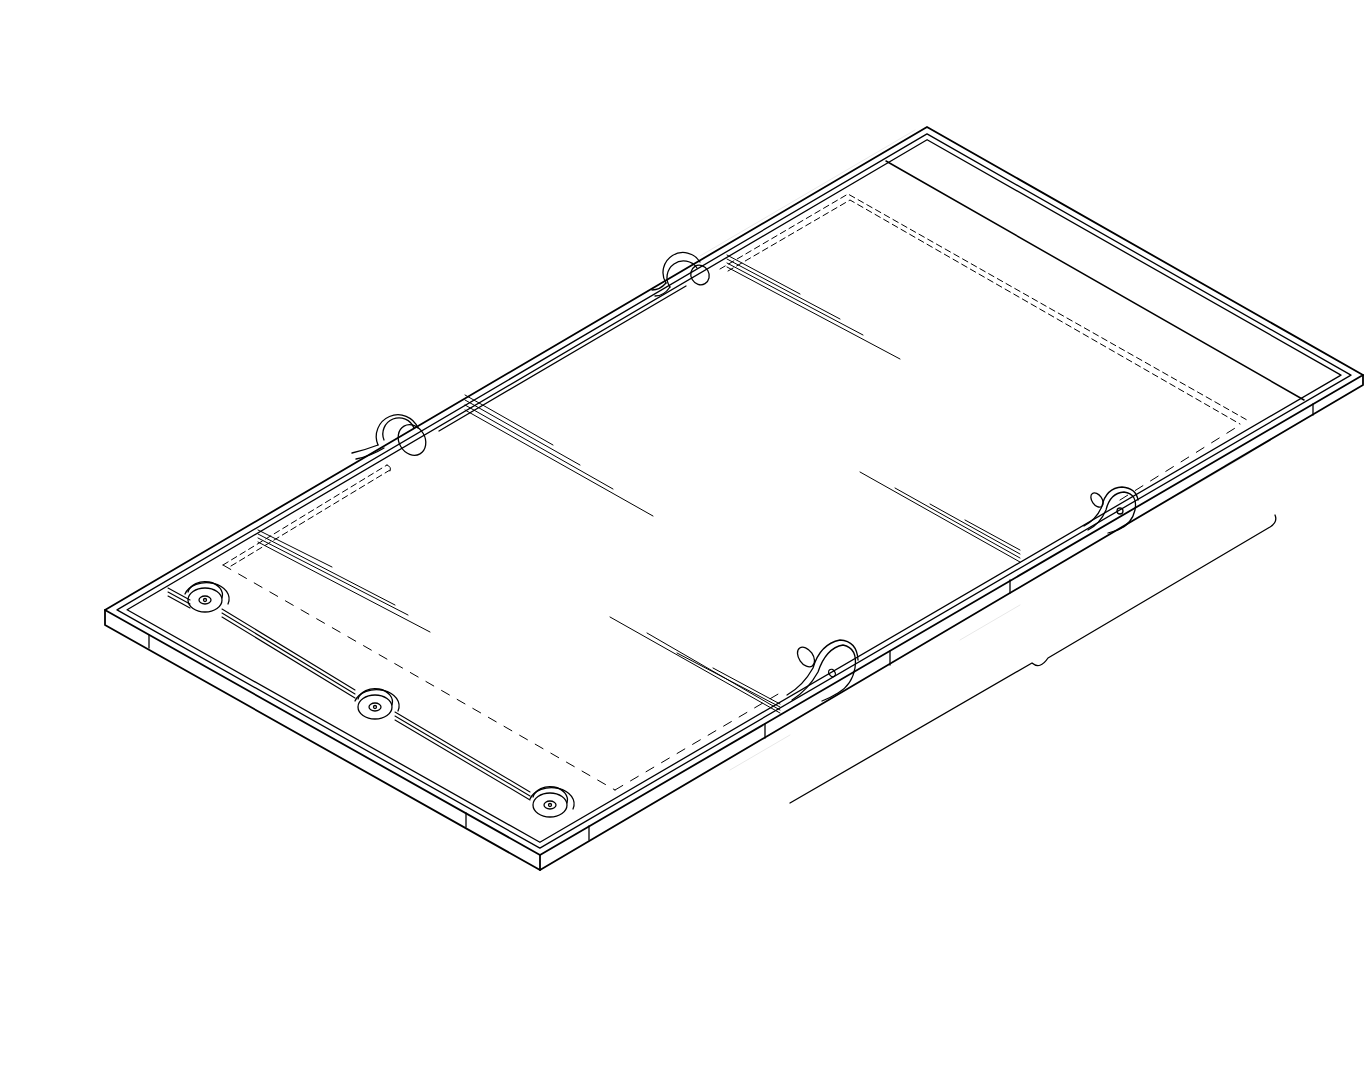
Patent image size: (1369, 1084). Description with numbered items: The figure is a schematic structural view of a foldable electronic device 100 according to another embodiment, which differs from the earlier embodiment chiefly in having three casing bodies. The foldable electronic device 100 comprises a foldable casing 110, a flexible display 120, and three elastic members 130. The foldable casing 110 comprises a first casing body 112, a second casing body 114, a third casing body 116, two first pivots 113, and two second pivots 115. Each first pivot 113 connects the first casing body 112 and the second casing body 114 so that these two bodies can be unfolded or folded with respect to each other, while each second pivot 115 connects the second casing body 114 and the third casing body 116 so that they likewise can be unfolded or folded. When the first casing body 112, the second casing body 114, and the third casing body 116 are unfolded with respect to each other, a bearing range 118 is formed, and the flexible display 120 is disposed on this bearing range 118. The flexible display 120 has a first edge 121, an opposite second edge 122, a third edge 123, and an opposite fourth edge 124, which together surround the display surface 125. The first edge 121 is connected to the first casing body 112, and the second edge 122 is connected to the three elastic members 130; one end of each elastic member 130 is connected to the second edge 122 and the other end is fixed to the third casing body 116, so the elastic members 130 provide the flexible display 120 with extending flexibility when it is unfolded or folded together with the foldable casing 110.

The foldable electronic device 100 is at (1176, 758).
The foldable casing 110 is at (734, 502).
The first casing body 112 is at (1208, 481).
The first pivot 113 is at (700, 246).
The second casing body 114 is at (978, 607).
The second pivot 115 is at (412, 405).
The third casing body 116 is at (757, 742).
The bearing range 118 is at (998, 200).
The flexible display 120 is at (465, 425).
The first edge 121 is at (1220, 345).
The second edge 122 is at (480, 770).
The third edge 123 is at (1253, 440).
The fourth edge 124 is at (790, 205).
The display surface 125 is at (1000, 315).
The elastic member 130 is at (183, 603).